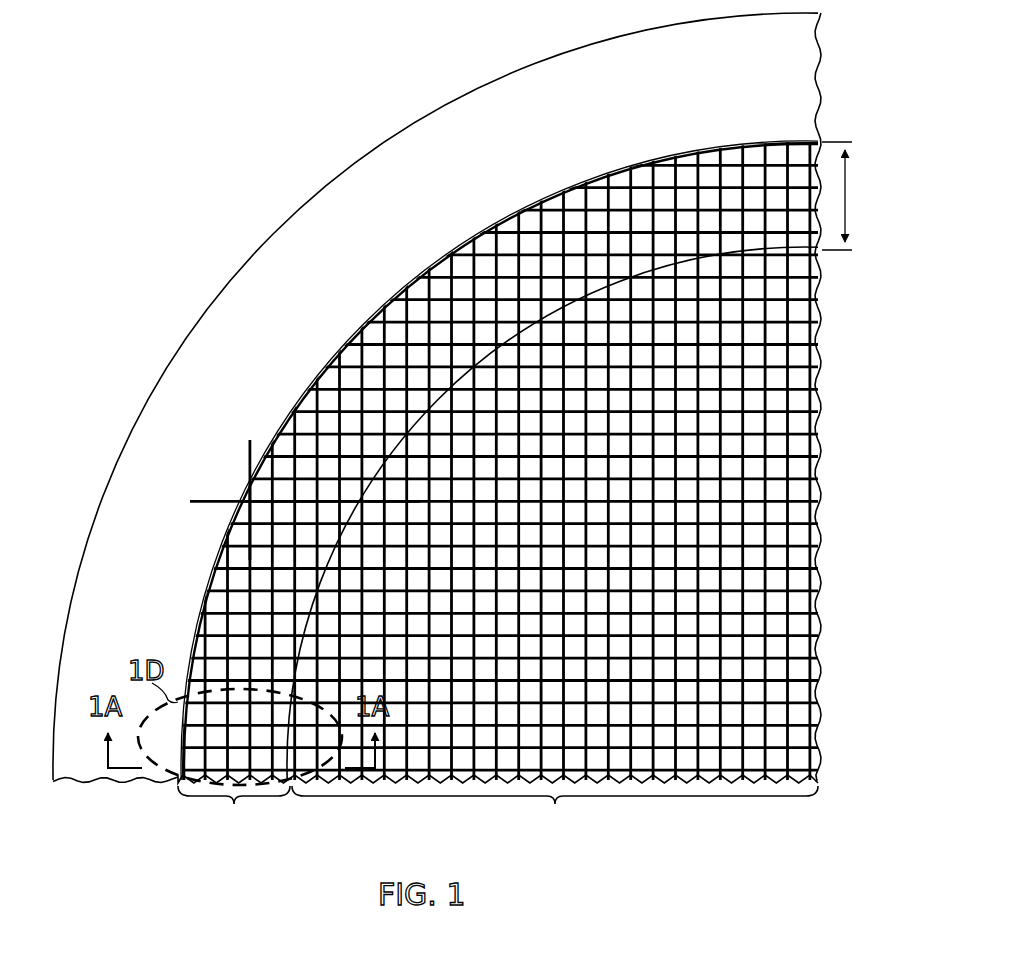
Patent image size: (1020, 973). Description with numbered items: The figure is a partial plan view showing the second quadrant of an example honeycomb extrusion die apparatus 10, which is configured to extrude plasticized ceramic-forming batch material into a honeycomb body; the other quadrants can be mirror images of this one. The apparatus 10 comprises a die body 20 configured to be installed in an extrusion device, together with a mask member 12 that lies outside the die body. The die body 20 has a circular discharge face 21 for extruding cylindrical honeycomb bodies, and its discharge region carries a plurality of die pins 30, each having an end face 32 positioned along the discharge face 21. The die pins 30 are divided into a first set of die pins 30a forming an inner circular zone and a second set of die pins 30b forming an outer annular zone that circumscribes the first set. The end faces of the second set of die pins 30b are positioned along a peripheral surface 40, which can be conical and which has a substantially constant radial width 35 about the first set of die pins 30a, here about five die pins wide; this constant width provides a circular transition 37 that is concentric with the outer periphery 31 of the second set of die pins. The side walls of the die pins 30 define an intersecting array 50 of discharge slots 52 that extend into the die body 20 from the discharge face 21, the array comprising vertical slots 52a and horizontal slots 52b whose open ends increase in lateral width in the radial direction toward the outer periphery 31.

The honeycomb extrusion die apparatus 10 is at (288, 126).
The mask member 12 is at (93, 549).
The die body 20 is at (832, 492).
The discharge face 21 is at (712, 734).
The die pins 30 is at (798, 738).
The first set of die pins 30a is at (555, 814).
The second set of die pins 30b is at (234, 814).
The outer periphery 31 is at (797, 137).
The end face 32 is at (372, 336).
The radial width 35 is at (838, 196).
The circular transition 37 is at (808, 252).
The peripheral surface 40 is at (272, 674).
The intersecting array 50 is at (802, 400).
The discharge slots 52 is at (796, 590).
The vertical slots 52a is at (268, 512).
The horizontal slots 52b is at (256, 535).